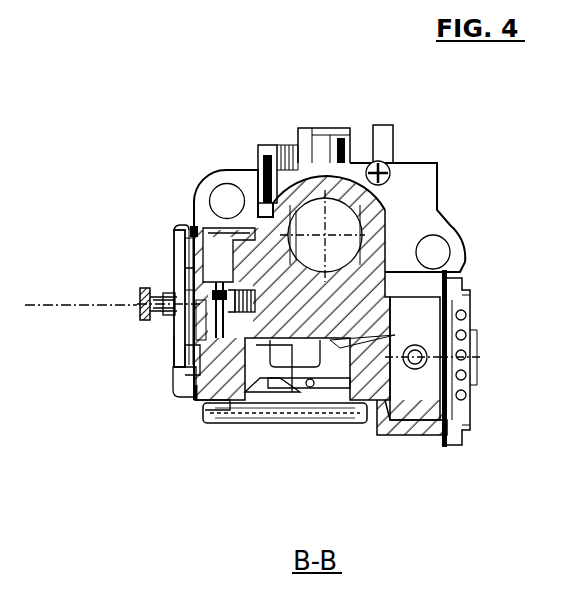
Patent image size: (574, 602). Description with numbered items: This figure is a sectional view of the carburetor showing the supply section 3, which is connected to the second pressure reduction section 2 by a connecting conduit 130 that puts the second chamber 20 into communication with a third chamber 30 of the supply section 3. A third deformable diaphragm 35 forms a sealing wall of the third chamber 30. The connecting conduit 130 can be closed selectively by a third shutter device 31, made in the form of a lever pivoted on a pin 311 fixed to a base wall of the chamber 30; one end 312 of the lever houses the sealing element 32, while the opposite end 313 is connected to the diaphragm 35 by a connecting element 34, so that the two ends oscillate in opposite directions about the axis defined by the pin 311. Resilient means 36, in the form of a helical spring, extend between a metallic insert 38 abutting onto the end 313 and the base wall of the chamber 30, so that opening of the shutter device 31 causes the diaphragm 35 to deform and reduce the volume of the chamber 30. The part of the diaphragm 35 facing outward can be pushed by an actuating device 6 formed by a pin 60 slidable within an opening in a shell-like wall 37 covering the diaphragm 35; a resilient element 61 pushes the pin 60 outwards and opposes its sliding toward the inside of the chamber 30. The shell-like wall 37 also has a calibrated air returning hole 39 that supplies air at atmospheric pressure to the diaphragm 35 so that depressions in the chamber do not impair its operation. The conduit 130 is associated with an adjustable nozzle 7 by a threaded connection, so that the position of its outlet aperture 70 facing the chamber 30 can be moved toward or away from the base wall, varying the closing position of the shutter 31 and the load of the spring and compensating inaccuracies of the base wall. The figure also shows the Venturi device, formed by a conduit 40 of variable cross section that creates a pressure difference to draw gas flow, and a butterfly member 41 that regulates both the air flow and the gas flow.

The second pressure reduction section 2 is at (355, 430).
The supply section 3 is at (178, 223).
The actuating device 6 is at (112, 297).
The adjustable nozzle 7 is at (442, 300).
The second chamber 20 is at (255, 383).
The third chamber 30 is at (202, 224).
The third shutter device 31 is at (183, 368).
The sealing element 32 is at (305, 300).
The connecting element 34 is at (176, 255).
The third deformable diaphragm 35 is at (176, 238).
The resilient means 36 is at (240, 285).
The shell-like wall 37 is at (177, 335).
The metallic insert 38 is at (220, 232).
The calibrated air returning hole 39 is at (183, 393).
The conduit 40 is at (373, 157).
The butterfly member 41 is at (338, 138).
The pin 60 is at (140, 292).
The resilient element 61 is at (165, 290).
The outlet aperture 70 is at (335, 340).
The connecting conduit 130 is at (222, 423).
The pin 311 is at (174, 353).
The end 312 is at (187, 400).
The end 313 is at (185, 223).